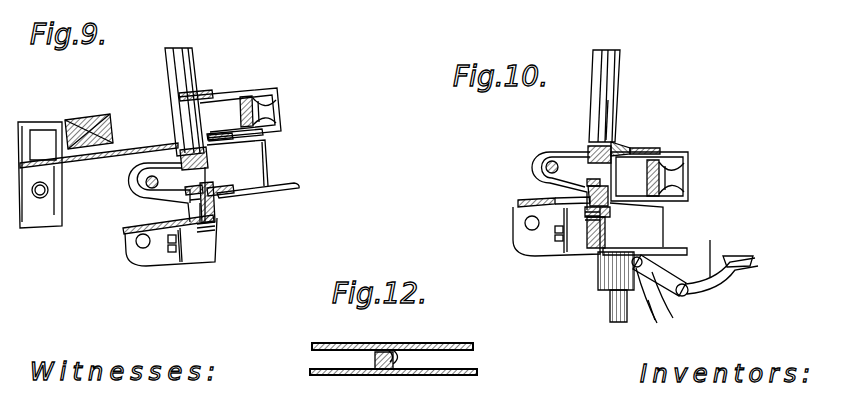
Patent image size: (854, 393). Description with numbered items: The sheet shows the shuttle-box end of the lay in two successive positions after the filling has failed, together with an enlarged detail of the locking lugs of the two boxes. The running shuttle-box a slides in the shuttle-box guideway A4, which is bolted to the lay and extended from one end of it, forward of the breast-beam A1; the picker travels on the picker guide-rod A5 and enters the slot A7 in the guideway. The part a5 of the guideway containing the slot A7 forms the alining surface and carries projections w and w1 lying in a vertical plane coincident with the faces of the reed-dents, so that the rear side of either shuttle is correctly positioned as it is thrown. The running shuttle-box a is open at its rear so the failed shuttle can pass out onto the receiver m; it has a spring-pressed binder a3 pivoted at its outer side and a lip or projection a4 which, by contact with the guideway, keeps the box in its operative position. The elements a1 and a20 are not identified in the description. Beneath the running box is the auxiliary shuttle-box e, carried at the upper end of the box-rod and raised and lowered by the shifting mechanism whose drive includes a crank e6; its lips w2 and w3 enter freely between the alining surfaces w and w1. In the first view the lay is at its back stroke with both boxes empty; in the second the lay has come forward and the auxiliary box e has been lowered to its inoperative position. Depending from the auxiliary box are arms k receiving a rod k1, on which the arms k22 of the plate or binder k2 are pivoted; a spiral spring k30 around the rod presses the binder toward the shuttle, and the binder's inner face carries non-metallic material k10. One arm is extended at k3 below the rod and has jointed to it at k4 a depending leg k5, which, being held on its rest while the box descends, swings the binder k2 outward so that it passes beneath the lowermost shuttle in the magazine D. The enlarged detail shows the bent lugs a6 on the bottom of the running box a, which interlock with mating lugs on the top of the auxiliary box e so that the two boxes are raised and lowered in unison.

In FIG. 9, the breast-beam A1 is at (40, 128).
In FIG. 9, the shuttle-box guideway A4 is at (234, 236).
In FIG. 10, the shuttle-box guideway A4 is at (543, 264).
In FIG. 9, the picker guide-rod A5 is at (146, 182).
In FIG. 10, the picker guide-rod A5 is at (546, 166).
In FIG. 9, the slot A7 is at (205, 174).
In FIG. 10, the slot A7 is at (586, 172).
In FIG. 9, the running shuttle-box a is at (156, 152).
In FIG. 10, the running shuttle-box a is at (622, 148).
In FIG. 12, the running shuttle-box a is at (440, 343).
In FIG. 9, the vertical guide bar a1 is at (186, 74).
In FIG. 10, the vertical guide bar a1 is at (611, 120).
In FIG. 9, the binder a3 is at (270, 112).
In FIG. 10, the binder a3 is at (673, 175).
In FIG. 9, the lip or projection a4 is at (178, 97).
In FIG. 10, the lip or projection a4 is at (597, 142).
In FIG. 10, the alining surface part of the shuttle-box guideway a5 is at (587, 148).
In FIG. 9, the bent ears or lugs a6 is at (213, 142).
In FIG. 10, the bent ears or lugs a6 is at (680, 190).
In FIG. 12, the bent ears or lugs a6 is at (403, 359).
In FIG. 9, the frame strip a20 is at (235, 95).
In FIG. 10, the frame strip a20 is at (645, 195).
In FIG. 9, the receiver m is at (70, 156).
In FIG. 9, the auxiliary shuttle-box e is at (252, 181).
In FIG. 10, the auxiliary shuttle-box e is at (666, 206).
In FIG. 12, the auxiliary shuttle-box e is at (403, 367).
In FIG. 12, the crank e6 is at (377, 362).
In FIG. 10, the projections of the alining surface w is at (606, 165).
In FIG. 9, the projections of the alining surface w1 is at (215, 215).
In FIG. 10, the projections of the alining surface w1 is at (608, 188).
In FIG. 9, the lip w2 is at (186, 190).
In FIG. 10, the lip w2 is at (608, 240).
In FIG. 9, the lip w3 is at (182, 165).
In FIG. 10, the lip w3 is at (611, 214).
In FIG. 10, the magazine D is at (612, 306).
In FIG. 10, the arms k is at (661, 275).
In FIG. 10, the rod k1 is at (688, 294).
In FIG. 10, the plate or binder k2 is at (748, 267).
In FIG. 10, the extension k3 is at (670, 315).
In FIG. 10, the joint k4 is at (632, 263).
In FIG. 10, the depending leg k5 is at (658, 321).
In FIG. 10, the non-metallic material k10 is at (740, 256).
In FIG. 10, the arms of the plate or binder k22 is at (716, 290).
In FIG. 10, the spiral spring k30 is at (712, 253).